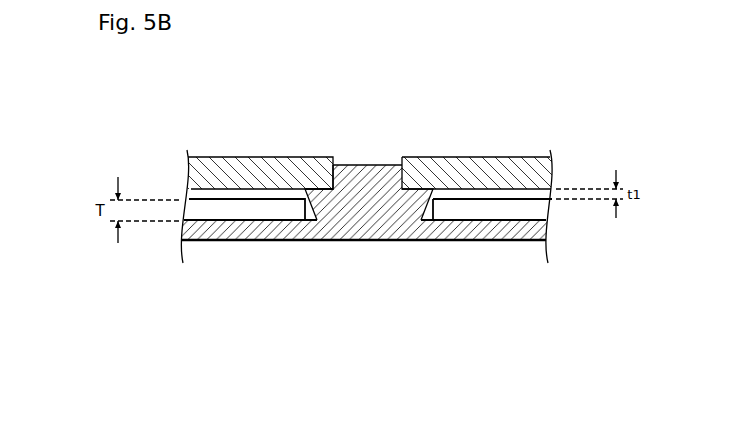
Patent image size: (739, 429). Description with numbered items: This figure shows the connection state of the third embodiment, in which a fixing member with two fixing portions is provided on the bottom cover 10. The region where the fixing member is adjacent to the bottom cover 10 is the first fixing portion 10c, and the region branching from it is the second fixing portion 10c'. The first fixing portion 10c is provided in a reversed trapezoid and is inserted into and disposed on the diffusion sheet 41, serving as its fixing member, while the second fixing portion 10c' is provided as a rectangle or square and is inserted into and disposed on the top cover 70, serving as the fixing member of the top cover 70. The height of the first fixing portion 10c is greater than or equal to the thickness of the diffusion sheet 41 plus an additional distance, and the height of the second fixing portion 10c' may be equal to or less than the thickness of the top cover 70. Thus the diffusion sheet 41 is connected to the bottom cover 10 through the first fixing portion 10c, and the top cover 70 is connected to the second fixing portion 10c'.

The bottom cover 10 is at (372, 227).
The first fixing portion 10c is at (319, 151).
The second fixing portion 10c' is at (367, 139).
The diffusion sheet 41 is at (247, 213).
The top cover 70 is at (456, 164).